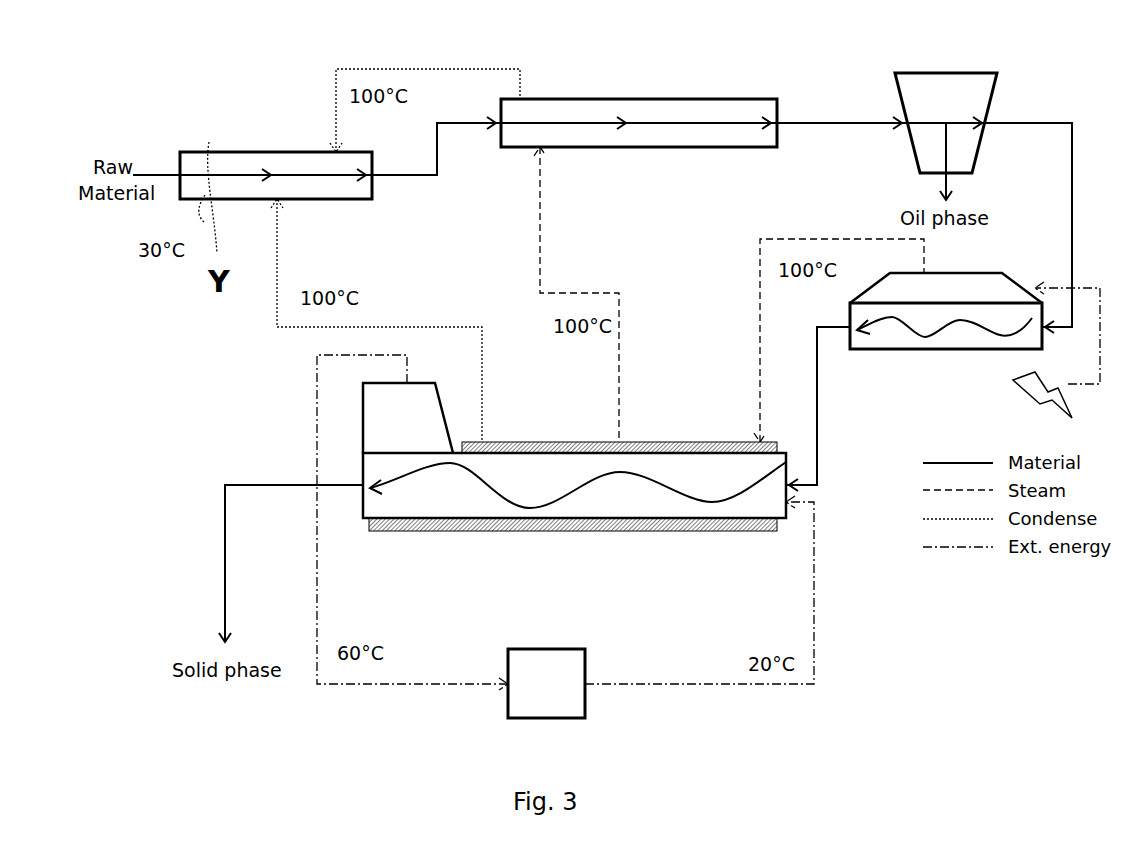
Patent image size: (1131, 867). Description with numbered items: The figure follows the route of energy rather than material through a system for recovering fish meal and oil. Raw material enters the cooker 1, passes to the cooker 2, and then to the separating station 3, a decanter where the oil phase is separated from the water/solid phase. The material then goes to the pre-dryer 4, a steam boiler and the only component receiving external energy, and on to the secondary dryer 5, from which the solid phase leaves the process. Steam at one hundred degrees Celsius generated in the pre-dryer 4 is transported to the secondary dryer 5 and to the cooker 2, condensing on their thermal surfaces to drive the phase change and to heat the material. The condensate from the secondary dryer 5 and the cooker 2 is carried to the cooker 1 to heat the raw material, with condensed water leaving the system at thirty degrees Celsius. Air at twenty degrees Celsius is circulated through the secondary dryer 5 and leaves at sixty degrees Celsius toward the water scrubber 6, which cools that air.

The cooker 1 is at (276, 156).
The cooker 2 is at (639, 105).
The separating station 3 is at (946, 97).
The pre-dryer 4 is at (946, 335).
The secondary dryer 5 is at (574, 480).
The water scrubber 6 is at (546, 683).